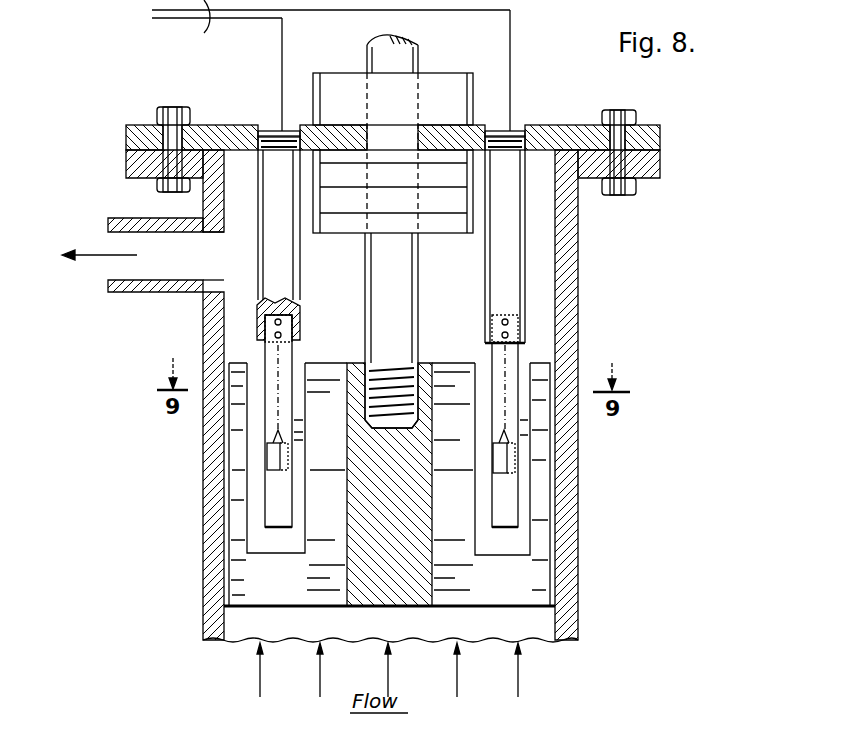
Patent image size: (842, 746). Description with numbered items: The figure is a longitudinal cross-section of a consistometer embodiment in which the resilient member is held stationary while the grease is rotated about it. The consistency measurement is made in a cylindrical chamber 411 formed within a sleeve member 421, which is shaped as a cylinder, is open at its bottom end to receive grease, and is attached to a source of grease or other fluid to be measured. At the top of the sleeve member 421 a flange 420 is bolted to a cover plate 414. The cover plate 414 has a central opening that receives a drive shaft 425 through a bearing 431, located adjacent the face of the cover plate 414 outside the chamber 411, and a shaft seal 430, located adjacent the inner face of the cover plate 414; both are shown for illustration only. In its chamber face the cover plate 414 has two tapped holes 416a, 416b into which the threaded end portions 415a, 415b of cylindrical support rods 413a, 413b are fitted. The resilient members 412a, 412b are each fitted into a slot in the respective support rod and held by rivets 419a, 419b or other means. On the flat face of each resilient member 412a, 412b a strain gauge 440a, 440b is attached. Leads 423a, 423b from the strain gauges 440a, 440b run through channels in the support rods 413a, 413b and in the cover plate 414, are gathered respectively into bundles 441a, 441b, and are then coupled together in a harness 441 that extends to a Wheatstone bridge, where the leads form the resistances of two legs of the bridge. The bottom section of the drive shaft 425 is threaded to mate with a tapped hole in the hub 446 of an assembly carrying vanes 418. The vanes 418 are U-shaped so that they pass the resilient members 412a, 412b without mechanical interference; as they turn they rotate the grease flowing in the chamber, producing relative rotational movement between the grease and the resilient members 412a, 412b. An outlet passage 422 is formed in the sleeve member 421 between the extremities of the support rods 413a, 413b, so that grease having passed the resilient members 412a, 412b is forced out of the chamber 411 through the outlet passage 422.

The cylindrical chamber 411 is at (457, 309).
The resilient member 412a is at (291, 364).
The resilient member 412b is at (492, 352).
The cylindrical support rod 413a is at (285, 262).
The cylindrical support rod 413b is at (497, 253).
The cover plate 414 is at (577, 128).
The threaded end portion 415a is at (297, 131).
The threaded end portion 415b is at (493, 131).
The tapped hole 416a is at (268, 134).
The tapped hole 416b is at (520, 134).
The vanes 418 is at (305, 588).
The rivet 419a is at (281, 335).
The rivet 419b is at (501, 335).
The flange 420 is at (657, 175).
The sleeve member 421 is at (575, 322).
The outlet passage 422 is at (160, 292).
The leads 423a is at (277, 408).
The leads 423b is at (508, 402).
The drive shaft 425 is at (418, 60).
The shaft seal 430 is at (404, 220).
The bearing 431 is at (335, 92).
The strain gauge 440a is at (281, 461).
The strain gauge 440b is at (493, 460).
The harness 441 is at (202, 32).
The bundle 441a is at (280, 62).
The bundle 441b is at (511, 26).
The hub 446 is at (403, 527).